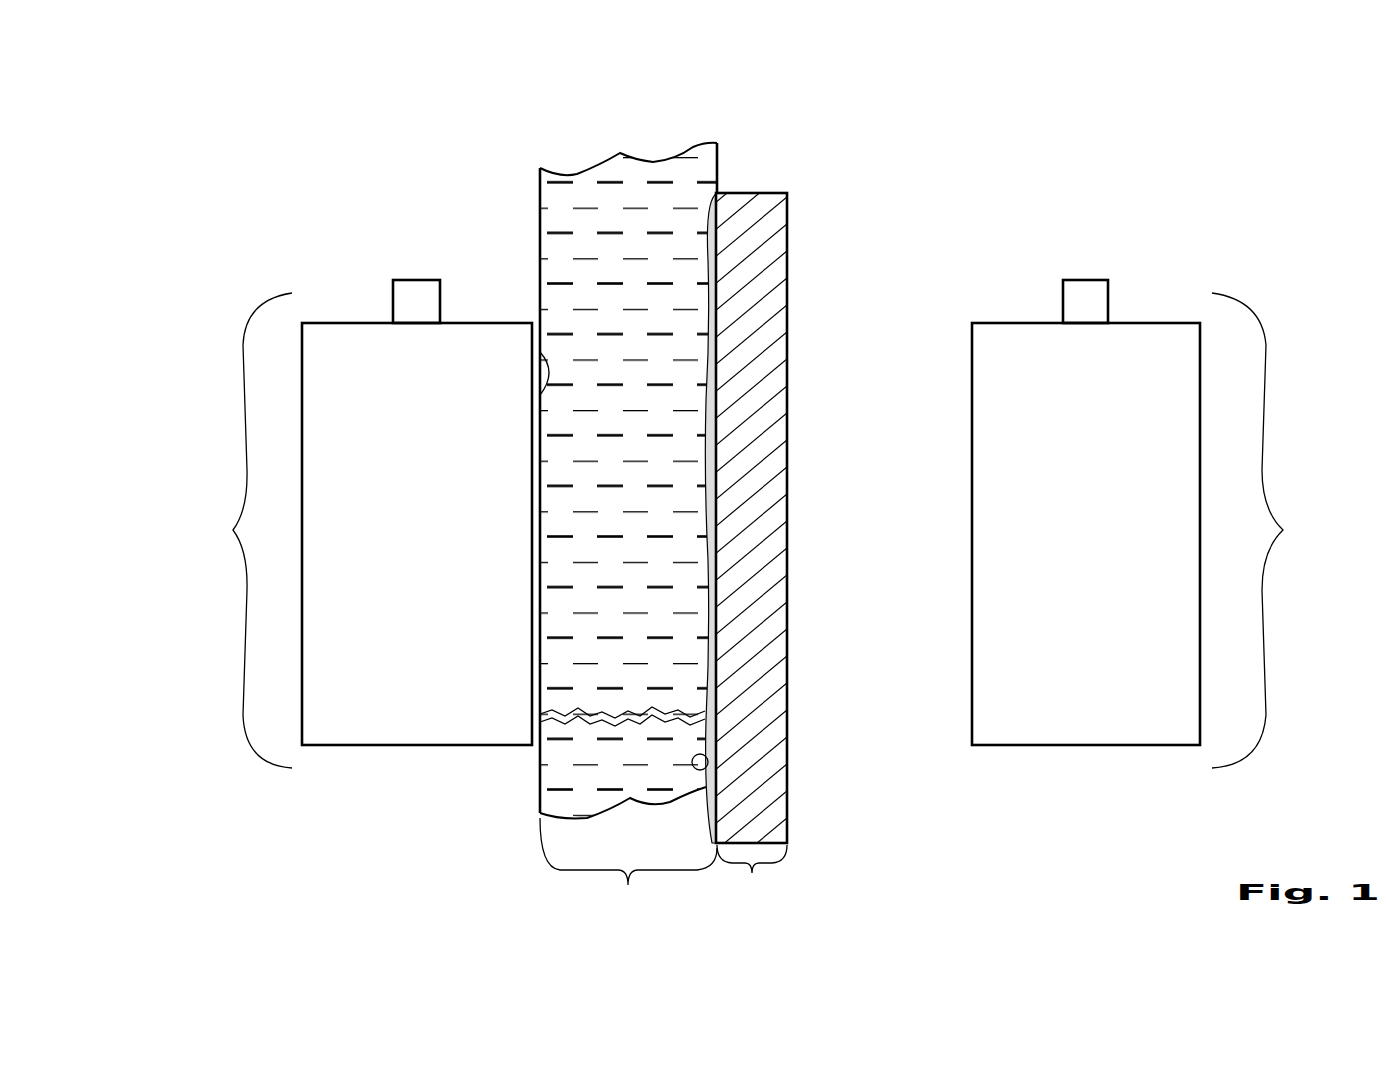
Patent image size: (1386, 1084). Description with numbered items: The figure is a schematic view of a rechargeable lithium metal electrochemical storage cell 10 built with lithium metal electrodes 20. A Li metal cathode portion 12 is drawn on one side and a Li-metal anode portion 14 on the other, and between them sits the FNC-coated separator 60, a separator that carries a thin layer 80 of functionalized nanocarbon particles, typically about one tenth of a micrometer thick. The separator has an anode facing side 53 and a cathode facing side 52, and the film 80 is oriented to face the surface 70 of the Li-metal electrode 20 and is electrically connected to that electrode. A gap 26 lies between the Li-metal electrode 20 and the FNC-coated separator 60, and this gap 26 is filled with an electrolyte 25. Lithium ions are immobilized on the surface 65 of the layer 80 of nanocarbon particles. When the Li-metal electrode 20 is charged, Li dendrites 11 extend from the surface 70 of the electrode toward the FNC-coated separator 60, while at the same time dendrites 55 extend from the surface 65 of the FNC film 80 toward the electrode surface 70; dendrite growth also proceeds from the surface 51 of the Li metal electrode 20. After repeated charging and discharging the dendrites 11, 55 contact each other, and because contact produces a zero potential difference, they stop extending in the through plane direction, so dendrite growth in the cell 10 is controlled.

The rechargeable lithium metal electrochemical storage cell 10 is at (238, 815).
The Li dendrites 11 is at (584, 481).
The Li metal cathode portion 12 is at (1065, 713).
The Li-metal anode portion 14 is at (420, 713).
The lithium metal electrodes 20 is at (755, 530).
The electrolyte 25 is at (717, 137).
The gap 26 is at (584, 440).
The surface of the Li metal electrode 51 is at (545, 392).
The cathode facing side 52 is at (800, 327).
The anode facing side 53 is at (705, 246).
The dendrites 55 is at (584, 481).
The FNC-coated separator 60 is at (752, 877).
The surface of the FNC film 65 is at (708, 764).
The surface of the Li-metal electrode 70 is at (628, 869).
The layer of functionalized nanocarbon particles 80 is at (710, 840).